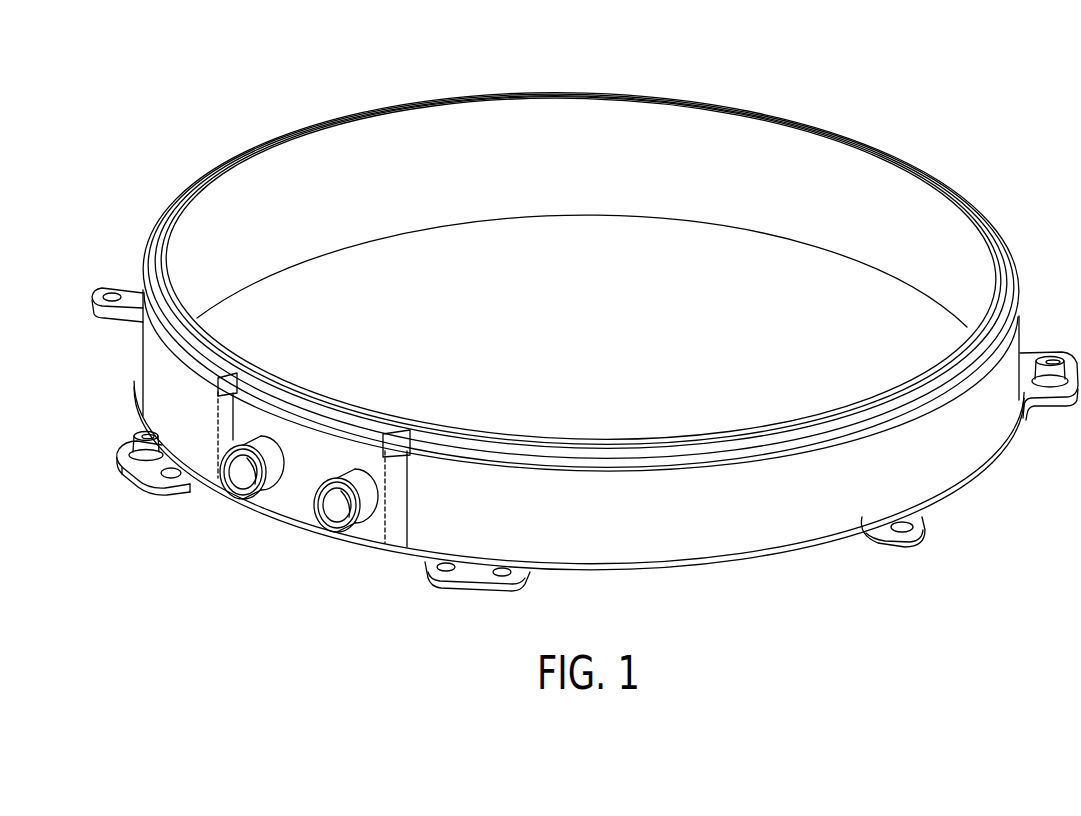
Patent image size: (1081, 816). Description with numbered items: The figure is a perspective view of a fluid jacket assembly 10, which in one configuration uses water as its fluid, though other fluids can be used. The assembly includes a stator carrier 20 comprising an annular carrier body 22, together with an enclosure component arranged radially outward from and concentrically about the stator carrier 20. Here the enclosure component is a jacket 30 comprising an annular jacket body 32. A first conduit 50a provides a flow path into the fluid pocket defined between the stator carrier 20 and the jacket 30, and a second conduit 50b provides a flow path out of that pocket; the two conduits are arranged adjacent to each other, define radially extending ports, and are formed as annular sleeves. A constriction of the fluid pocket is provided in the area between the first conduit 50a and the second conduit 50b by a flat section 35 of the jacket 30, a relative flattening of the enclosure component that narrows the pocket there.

The fluid jacket assembly 10 is at (214, 127).
The stator carrier 20 is at (890, 168).
The annular carrier body 22 is at (950, 228).
The jacket 30 is at (562, 492).
The annular jacket body 32 is at (922, 470).
The flat section 35 is at (313, 450).
The first conduit 50a is at (337, 510).
The second conduit 50b is at (245, 480).